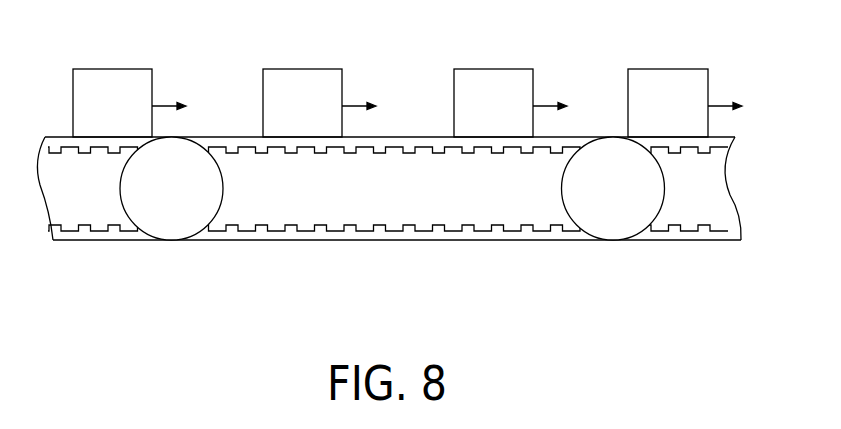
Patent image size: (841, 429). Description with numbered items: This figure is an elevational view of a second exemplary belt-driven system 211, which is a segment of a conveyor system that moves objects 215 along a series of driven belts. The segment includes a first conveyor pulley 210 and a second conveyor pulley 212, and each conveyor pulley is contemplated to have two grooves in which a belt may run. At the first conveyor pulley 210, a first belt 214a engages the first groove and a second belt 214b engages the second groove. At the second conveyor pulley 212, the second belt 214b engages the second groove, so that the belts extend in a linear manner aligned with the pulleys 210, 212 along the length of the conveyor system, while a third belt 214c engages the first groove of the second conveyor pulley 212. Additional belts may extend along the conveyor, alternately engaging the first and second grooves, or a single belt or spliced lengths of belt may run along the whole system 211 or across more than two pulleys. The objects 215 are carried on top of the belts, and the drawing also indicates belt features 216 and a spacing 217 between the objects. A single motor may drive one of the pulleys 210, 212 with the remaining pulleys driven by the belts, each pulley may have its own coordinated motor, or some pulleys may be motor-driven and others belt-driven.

The first conveyor pulley 210 is at (168, 207).
The belt-driven system 211 is at (588, 85).
The second conveyor pulley 212 is at (605, 225).
The first belt 214a is at (62, 236).
The second belt 214b is at (362, 234).
The third belt 214c is at (662, 240).
The objects 215 is at (141, 120).
The belt teeth 216 is at (118, 150).
The spacing between carriers 217 is at (368, 86).